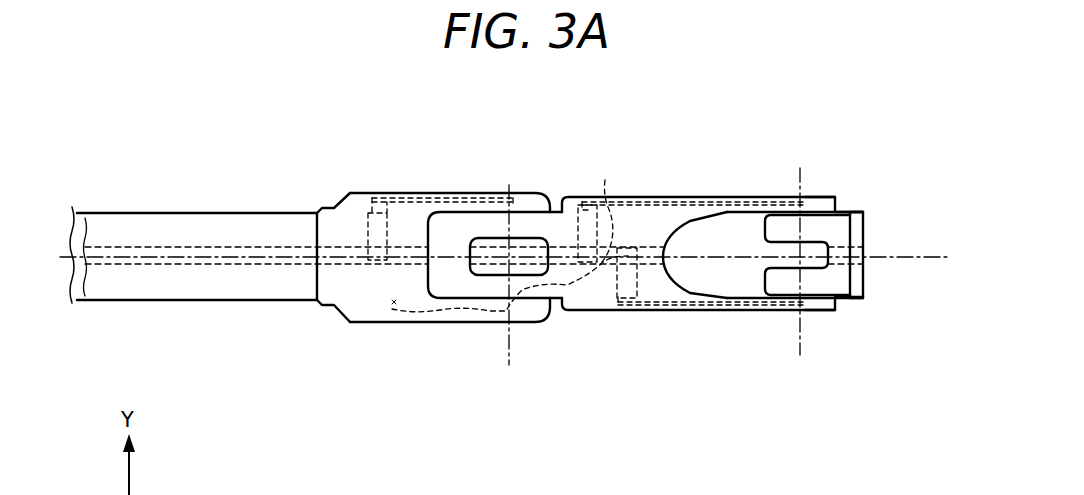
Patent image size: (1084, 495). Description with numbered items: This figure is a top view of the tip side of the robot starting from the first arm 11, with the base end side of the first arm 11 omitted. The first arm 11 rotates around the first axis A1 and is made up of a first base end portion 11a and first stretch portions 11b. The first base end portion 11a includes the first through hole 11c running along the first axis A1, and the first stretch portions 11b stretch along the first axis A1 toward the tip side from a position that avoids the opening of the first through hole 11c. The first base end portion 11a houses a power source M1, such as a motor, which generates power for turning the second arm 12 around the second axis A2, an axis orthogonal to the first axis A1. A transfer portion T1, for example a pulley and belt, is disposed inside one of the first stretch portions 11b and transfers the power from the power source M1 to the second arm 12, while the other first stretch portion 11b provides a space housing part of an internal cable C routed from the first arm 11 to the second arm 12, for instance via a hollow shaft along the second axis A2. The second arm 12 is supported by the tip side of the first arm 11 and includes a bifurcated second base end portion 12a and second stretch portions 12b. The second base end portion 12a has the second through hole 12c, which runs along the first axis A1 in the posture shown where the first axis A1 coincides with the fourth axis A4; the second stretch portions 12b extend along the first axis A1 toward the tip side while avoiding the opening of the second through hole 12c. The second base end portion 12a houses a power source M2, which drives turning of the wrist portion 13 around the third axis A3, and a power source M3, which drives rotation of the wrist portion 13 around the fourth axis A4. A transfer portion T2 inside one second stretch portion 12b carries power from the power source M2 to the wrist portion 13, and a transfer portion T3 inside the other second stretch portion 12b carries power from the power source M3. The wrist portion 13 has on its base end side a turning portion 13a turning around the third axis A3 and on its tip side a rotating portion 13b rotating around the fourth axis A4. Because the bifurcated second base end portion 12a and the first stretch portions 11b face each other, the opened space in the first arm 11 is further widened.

The first arm 11 is at (304, 194).
The first base end portion 11a is at (375, 287).
The first stretch portion 11b is at (524, 200).
The first through hole 11c is at (212, 247).
The second arm 12 is at (657, 180).
The second base end portion 12a is at (592, 295).
The second stretch portion 12b is at (818, 205).
The second through hole 12c is at (607, 209).
The wrist portion 13 is at (921, 150).
The turning portion 13a is at (820, 228).
The rotating portion 13b is at (857, 232).
The power source M1 is at (358, 218).
The power source M2 is at (577, 235).
The power source M3 is at (612, 302).
The transfer portion T1 is at (440, 193).
The transfer portion T2 is at (697, 196).
The transfer portion T3 is at (707, 312).
The first axis A1 is at (262, 259).
The fourth axis A4 is at (477, 303).
The second axis A2 is at (507, 355).
The third axis A3 is at (800, 348).
The internal cable C is at (429, 313).